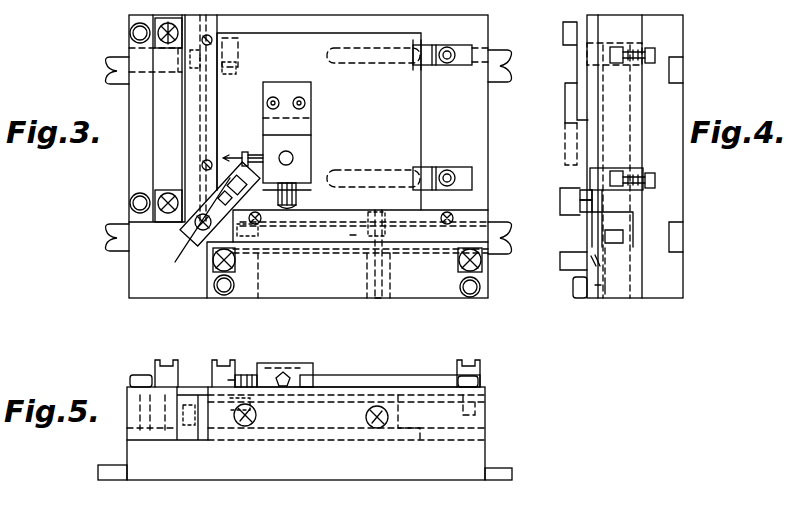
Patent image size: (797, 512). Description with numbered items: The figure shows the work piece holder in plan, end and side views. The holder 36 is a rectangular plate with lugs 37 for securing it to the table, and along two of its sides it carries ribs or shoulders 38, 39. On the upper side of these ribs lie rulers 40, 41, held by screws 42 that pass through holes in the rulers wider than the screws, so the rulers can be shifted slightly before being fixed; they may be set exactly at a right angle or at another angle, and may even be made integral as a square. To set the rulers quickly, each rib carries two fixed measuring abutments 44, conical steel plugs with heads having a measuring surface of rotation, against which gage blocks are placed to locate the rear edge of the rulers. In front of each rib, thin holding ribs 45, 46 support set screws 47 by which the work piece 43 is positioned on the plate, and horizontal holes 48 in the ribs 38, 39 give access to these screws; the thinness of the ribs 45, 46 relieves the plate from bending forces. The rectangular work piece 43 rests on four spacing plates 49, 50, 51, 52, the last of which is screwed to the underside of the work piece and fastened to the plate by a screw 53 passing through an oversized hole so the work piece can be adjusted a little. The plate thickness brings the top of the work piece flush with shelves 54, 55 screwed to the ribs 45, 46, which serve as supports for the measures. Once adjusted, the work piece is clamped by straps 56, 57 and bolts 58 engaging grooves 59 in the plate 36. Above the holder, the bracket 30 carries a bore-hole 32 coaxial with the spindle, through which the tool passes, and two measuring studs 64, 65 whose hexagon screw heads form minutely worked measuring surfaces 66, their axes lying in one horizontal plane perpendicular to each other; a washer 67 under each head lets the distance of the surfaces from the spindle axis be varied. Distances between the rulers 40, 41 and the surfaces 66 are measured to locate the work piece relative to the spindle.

In FIG. 3, the bracket 30 is at (300, 126).
In FIG. 4, the bracket 30 is at (566, 118).
In FIG. 5, the bracket 30 is at (312, 370).
In FIG. 3, the bore-hole 32 is at (295, 157).
In FIG. 4, the bore-hole 32 is at (570, 160).
In FIG. 5, the bore-hole 32 is at (284, 366).
In FIG. 3, the work piece holder 36 is at (490, 30).
In FIG. 4, the work piece holder 36 is at (635, 156).
In FIG. 3, the lugs 37 is at (492, 222).
In FIG. 4, the lugs 37 is at (698, 232).
In FIG. 5, the lugs 37 is at (528, 474).
In FIG. 3, the rib 38 is at (138, 136).
In FIG. 3, the rib 39 is at (336, 296).
In FIG. 3, the ruler 40 is at (163, 100).
In FIG. 3, the ruler 41 is at (300, 282).
In FIG. 3, the screws 42 is at (480, 262).
In FIG. 4, the screws 42 is at (566, 276).
In FIG. 5, the screws 42 is at (472, 366).
In FIG. 3, the work piece 43 is at (416, 154).
In FIG. 3, the fixed measuring abutments 44 is at (474, 292).
In FIG. 4, the fixed measuring abutments 44 is at (580, 292).
In FIG. 5, the fixed measuring abutments 44 is at (480, 382).
In FIG. 5, the holding rib 45 is at (196, 410).
In FIG. 4, the holding rib 46 is at (604, 232).
In FIG. 3, the set screws 47 is at (376, 288).
In FIG. 4, the set screws 47 is at (636, 292).
In FIG. 5, the set screws 47 is at (390, 416).
In FIG. 3, the horizontal holes 48 is at (380, 296).
In FIG. 5, the horizontal holes 48 is at (376, 430).
In FIG. 3, the spacing plate 49 is at (240, 55).
In FIG. 3, the spacing plate 50 is at (406, 66).
In FIG. 3, the spacing plate 51 is at (430, 190).
In FIG. 3, the spacing plate 52 is at (214, 192).
In FIG. 3, the screw 53 is at (212, 228).
In FIG. 3, the shelf 54 is at (195, 132).
In FIG. 4, the shelf 54 is at (605, 25).
In FIG. 3, the shelf 55 is at (432, 268).
In FIG. 4, the shelf 55 is at (588, 252).
In FIG. 3, the clamping strap 56 is at (450, 60).
In FIG. 4, the clamping strap 56 is at (604, 55).
In FIG. 3, the clamping strap 57 is at (478, 178).
In FIG. 4, the clamping strap 57 is at (608, 168).
In FIG. 3, the bolts 58 is at (450, 172).
In FIG. 4, the bolts 58 is at (628, 168).
In FIG. 3, the grooves 59 is at (488, 55).
In FIG. 4, the grooves 59 is at (698, 180).
In FIG. 3, the measuring stud 64 is at (252, 152).
In FIG. 5, the measuring stud 64 is at (253, 376).
In FIG. 3, the measuring stud 65 is at (296, 192).
In FIG. 4, the measuring stud 65 is at (580, 196).
In FIG. 3, the measuring surface 66 is at (318, 235).
In FIG. 4, the measuring surface 66 is at (565, 208).
In FIG. 5, the measuring surface 66 is at (240, 376).
In FIG. 3, the washer 67 is at (318, 166).
In FIG. 4, the washer 67 is at (580, 186).